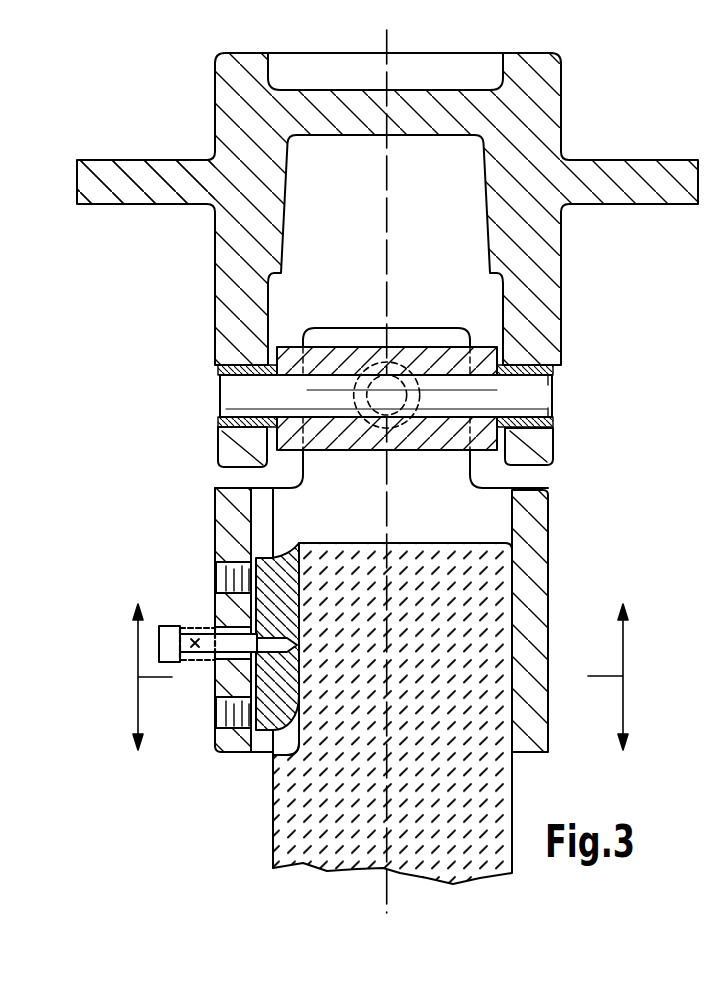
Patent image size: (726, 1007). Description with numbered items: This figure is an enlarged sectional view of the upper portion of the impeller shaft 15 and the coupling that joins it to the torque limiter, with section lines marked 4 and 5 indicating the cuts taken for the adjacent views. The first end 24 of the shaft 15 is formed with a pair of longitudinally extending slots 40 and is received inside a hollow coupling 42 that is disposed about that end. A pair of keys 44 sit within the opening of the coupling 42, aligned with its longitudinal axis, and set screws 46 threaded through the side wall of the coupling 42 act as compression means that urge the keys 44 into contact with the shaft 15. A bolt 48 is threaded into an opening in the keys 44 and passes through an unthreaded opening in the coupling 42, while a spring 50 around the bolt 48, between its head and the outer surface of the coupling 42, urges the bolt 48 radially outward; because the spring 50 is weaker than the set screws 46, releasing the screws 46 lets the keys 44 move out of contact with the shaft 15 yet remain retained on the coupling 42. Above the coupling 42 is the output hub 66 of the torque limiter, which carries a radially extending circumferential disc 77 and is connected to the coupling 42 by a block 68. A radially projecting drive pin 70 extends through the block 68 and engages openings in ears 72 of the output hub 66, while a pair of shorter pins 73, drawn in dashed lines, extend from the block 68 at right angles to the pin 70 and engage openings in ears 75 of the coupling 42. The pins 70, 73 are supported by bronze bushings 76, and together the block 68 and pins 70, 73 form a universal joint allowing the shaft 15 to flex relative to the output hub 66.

The shaft 15 is at (313, 825).
The first end of the shaft 24 is at (610, 478).
The longitudinally extending slots 40 is at (287, 548).
The hollow coupling 42 is at (550, 577).
The keys 44 is at (270, 566).
The set screws 46 is at (232, 582).
The bolt 48 is at (165, 644).
The spring 50 is at (186, 630).
The output hub 66 is at (532, 118).
The block 68 is at (337, 358).
The drive pin 70 is at (535, 399).
The ears 72 is at (538, 445).
The shorter pins 73 is at (398, 402).
The ears 75 is at (412, 335).
The bronze bushings 76 is at (532, 365).
The circumferential disc 77 is at (125, 177).
The section line 4- 4 is at (379, 733).
The section line 5- 5 is at (381, 674).